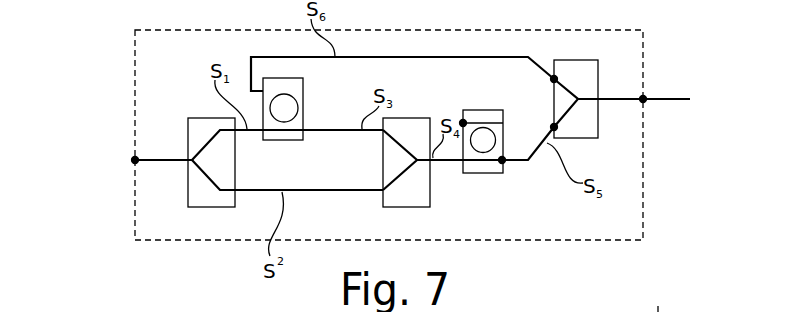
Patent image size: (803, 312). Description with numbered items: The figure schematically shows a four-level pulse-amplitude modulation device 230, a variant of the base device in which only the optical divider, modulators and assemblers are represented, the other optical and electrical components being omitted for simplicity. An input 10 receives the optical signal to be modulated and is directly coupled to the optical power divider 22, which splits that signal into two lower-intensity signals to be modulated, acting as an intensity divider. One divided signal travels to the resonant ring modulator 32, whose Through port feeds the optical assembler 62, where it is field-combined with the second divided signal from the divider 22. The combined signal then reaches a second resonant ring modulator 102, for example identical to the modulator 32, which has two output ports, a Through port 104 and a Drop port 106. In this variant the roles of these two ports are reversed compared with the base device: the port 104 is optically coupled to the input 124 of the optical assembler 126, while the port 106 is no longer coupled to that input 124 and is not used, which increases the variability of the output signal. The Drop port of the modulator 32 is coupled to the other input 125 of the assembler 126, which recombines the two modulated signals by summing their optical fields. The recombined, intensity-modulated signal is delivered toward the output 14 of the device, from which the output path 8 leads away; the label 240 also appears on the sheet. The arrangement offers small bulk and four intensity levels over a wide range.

The output optical signal path 8 is at (656, 98).
The input 10 is at (132, 160).
The output 14 is at (647, 101).
The optical power divider 22 is at (212, 198).
The resonant ring modulator 32 is at (300, 100).
The optical assembler 62 is at (416, 195).
The resonant ring modulator 102 is at (484, 174).
The output port 104 is at (505, 163).
The output port 106 is at (461, 120).
The input 124 is at (551, 126).
The input 125 is at (551, 79).
The optical assembler 126 is at (588, 120).
The 4-PAM modulation device 230 is at (645, 222).
The optical device 240 is at (663, 301).